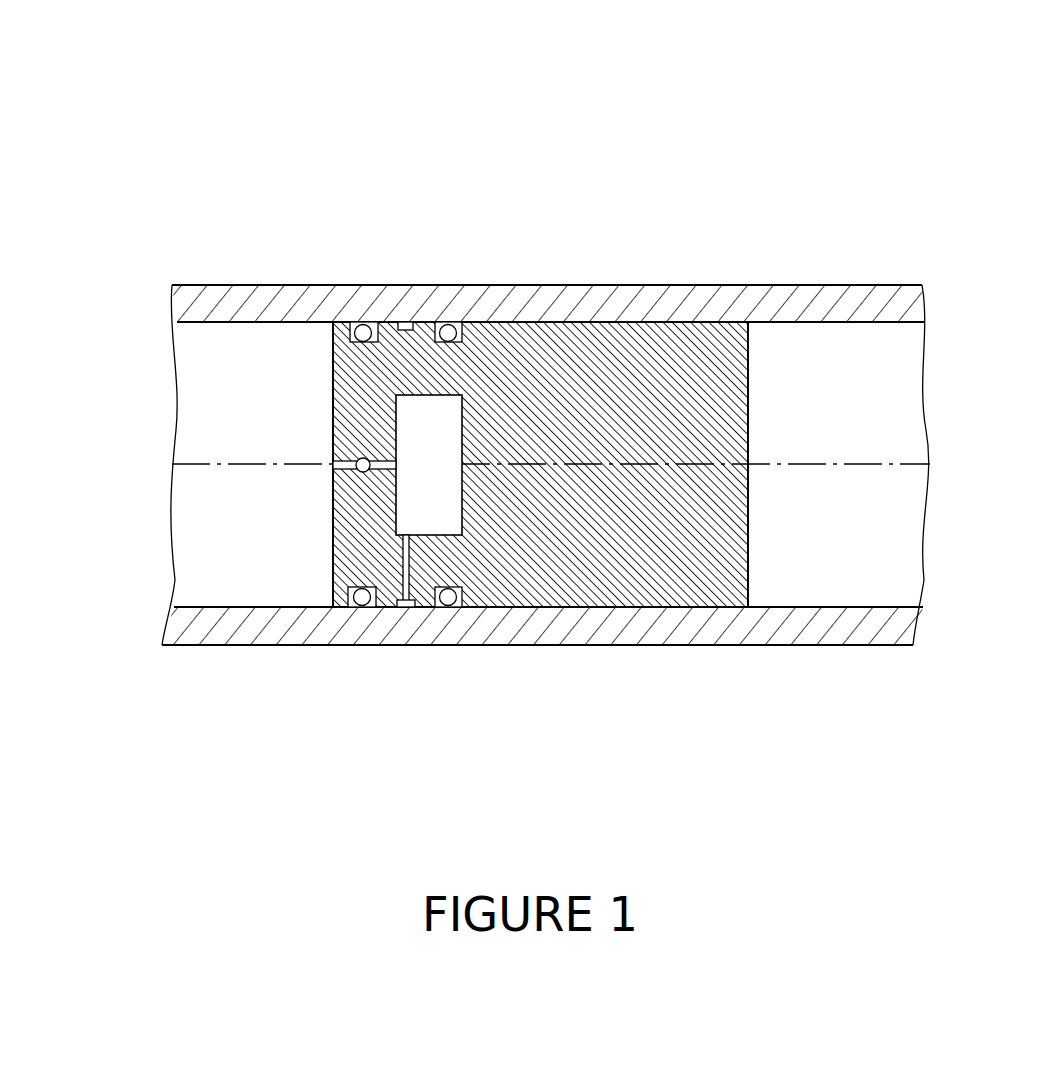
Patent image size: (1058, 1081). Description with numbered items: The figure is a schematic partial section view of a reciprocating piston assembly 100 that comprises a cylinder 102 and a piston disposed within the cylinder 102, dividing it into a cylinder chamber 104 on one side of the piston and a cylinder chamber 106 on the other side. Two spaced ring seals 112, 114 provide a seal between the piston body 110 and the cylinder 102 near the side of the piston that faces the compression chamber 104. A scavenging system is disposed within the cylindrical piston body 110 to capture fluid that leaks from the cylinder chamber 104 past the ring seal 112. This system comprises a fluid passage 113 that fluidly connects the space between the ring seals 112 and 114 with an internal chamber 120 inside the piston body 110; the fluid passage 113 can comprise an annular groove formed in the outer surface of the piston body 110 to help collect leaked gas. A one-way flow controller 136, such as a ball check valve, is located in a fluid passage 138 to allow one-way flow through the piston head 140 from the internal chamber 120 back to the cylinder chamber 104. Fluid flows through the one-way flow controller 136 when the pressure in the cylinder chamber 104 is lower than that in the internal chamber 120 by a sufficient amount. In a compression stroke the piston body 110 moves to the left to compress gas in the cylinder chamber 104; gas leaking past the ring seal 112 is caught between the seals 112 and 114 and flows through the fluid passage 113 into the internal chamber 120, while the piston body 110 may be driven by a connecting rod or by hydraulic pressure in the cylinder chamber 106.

The reciprocating piston assembly 100 is at (316, 102).
The cylinder 102 is at (290, 287).
The cylinder chamber 104 is at (292, 543).
The cylinder chamber 106 is at (882, 543).
The piston body 110 is at (660, 380).
The ring seal 112 is at (369, 325).
The fluid passage 113 is at (415, 602).
The ring seal 114 is at (446, 324).
The internal chamber 120 is at (437, 520).
The one-way flow controller 136 is at (362, 456).
The fluid passage 138 is at (352, 458).
The piston head 140 is at (365, 555).